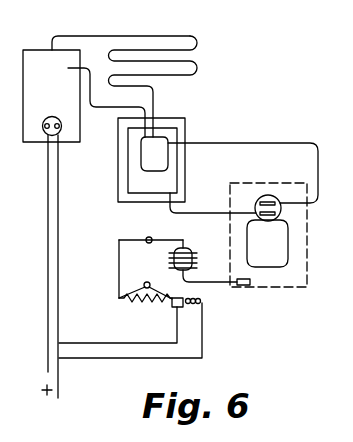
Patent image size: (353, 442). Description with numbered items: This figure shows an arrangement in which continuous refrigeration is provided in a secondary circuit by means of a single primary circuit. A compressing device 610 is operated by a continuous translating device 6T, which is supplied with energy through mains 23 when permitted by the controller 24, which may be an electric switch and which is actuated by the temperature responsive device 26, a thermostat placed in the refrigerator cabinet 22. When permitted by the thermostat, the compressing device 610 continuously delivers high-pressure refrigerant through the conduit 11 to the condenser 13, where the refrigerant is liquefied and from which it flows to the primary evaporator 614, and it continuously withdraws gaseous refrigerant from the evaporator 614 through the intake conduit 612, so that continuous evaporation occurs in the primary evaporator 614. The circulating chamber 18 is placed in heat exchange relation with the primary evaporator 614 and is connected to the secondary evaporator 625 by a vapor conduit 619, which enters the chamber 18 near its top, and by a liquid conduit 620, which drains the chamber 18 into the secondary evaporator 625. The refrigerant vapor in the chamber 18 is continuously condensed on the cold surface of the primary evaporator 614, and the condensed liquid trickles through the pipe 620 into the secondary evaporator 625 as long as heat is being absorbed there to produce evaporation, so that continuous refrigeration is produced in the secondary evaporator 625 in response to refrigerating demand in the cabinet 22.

The conduit 11 is at (83, 35).
The condenser 13 is at (194, 37).
The compressing device 610 is at (51, 96).
The continuous translating device 6T is at (60, 111).
The intake conduit 612 is at (100, 107).
The circulating chamber 18 is at (137, 183).
The primary evaporator 614 is at (172, 142).
The vapor conduit 619 is at (280, 143).
The liquid conduit 620 is at (200, 213).
The secondary evaporator 625 is at (288, 243).
The refrigerator cabinet 22 is at (298, 288).
The temperature responsive device 26 is at (243, 288).
The controller 24 is at (170, 306).
The mains 23 is at (47, 366).